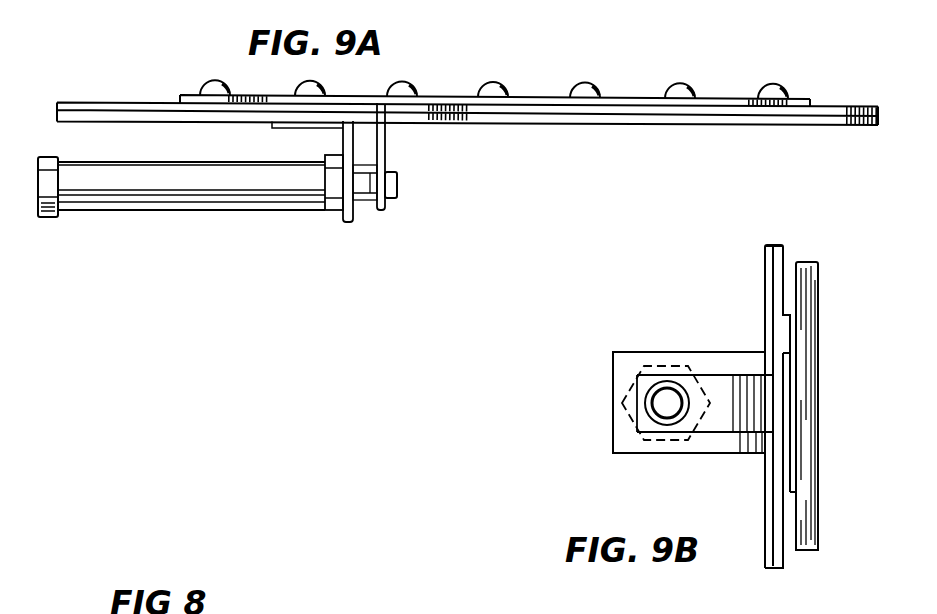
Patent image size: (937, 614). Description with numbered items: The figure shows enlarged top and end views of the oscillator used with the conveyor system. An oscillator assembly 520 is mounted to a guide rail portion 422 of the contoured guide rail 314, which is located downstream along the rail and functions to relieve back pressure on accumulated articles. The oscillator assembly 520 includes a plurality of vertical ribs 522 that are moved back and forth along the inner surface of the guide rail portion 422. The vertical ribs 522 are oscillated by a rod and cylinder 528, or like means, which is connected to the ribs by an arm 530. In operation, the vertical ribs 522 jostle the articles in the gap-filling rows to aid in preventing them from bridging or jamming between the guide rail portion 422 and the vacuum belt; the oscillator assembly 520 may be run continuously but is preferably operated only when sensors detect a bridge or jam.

In FIG. 9A, the contoured guide rail 314 is at (699, 121).
In FIG. 9B, the contoured guide rail 314 is at (763, 283).
In FIG. 9A, the vertical ribs 522 is at (763, 88).
In FIG. 9B, the vertical ribs 522 is at (808, 373).
In FIG. 9A, the guide rail portion 422 is at (850, 115).
In FIG. 9B, the guide rail portion 422 is at (771, 244).
In FIG. 9A, the rod and cylinder 528 is at (163, 196).
In FIG. 9B, the rod and cylinder 528 is at (633, 368).
In FIG. 9A, the oscillator assembly 520 is at (307, 214).
In FIG. 9B, the oscillator assembly 520 is at (736, 464).
In FIG. 9A, the arm 530 is at (386, 139).
In FIG. 9B, the arm 530 is at (720, 390).